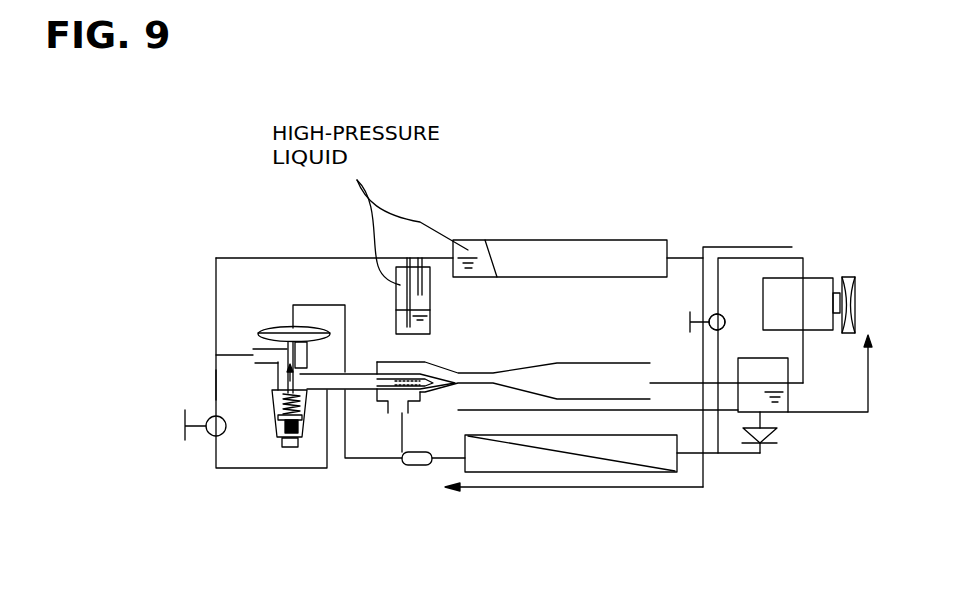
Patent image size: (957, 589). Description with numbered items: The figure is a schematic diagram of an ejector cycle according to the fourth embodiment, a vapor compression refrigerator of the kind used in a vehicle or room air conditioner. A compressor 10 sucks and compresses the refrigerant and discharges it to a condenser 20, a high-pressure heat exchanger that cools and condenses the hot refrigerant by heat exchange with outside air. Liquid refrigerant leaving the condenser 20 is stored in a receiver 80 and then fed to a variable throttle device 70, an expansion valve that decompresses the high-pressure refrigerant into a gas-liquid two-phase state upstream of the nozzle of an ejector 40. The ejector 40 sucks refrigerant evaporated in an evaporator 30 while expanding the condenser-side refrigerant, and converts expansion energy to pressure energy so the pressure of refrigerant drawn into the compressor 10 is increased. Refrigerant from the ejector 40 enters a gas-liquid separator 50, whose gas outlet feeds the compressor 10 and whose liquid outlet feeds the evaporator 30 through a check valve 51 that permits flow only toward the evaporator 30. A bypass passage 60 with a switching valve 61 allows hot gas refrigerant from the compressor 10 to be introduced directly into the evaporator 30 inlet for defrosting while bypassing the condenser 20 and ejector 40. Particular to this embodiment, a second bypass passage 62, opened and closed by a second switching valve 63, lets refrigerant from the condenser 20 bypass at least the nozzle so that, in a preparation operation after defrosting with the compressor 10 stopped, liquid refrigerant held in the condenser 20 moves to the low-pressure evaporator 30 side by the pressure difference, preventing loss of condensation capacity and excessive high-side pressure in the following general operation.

The compressor 10 is at (822, 278).
The condenser 20 is at (628, 240).
The evaporator 30 is at (466, 440).
The ejector 40 is at (545, 360).
The gas-liquid separator 50 is at (789, 389).
The check valve 51 is at (778, 436).
The bypass passage 60 is at (712, 341).
The switching valve 61 is at (722, 314).
The second bypass passage 62 is at (216, 383).
The second switching valve 63 is at (212, 437).
The variable throttle device 70 is at (262, 326).
The receiver 80 is at (430, 321).